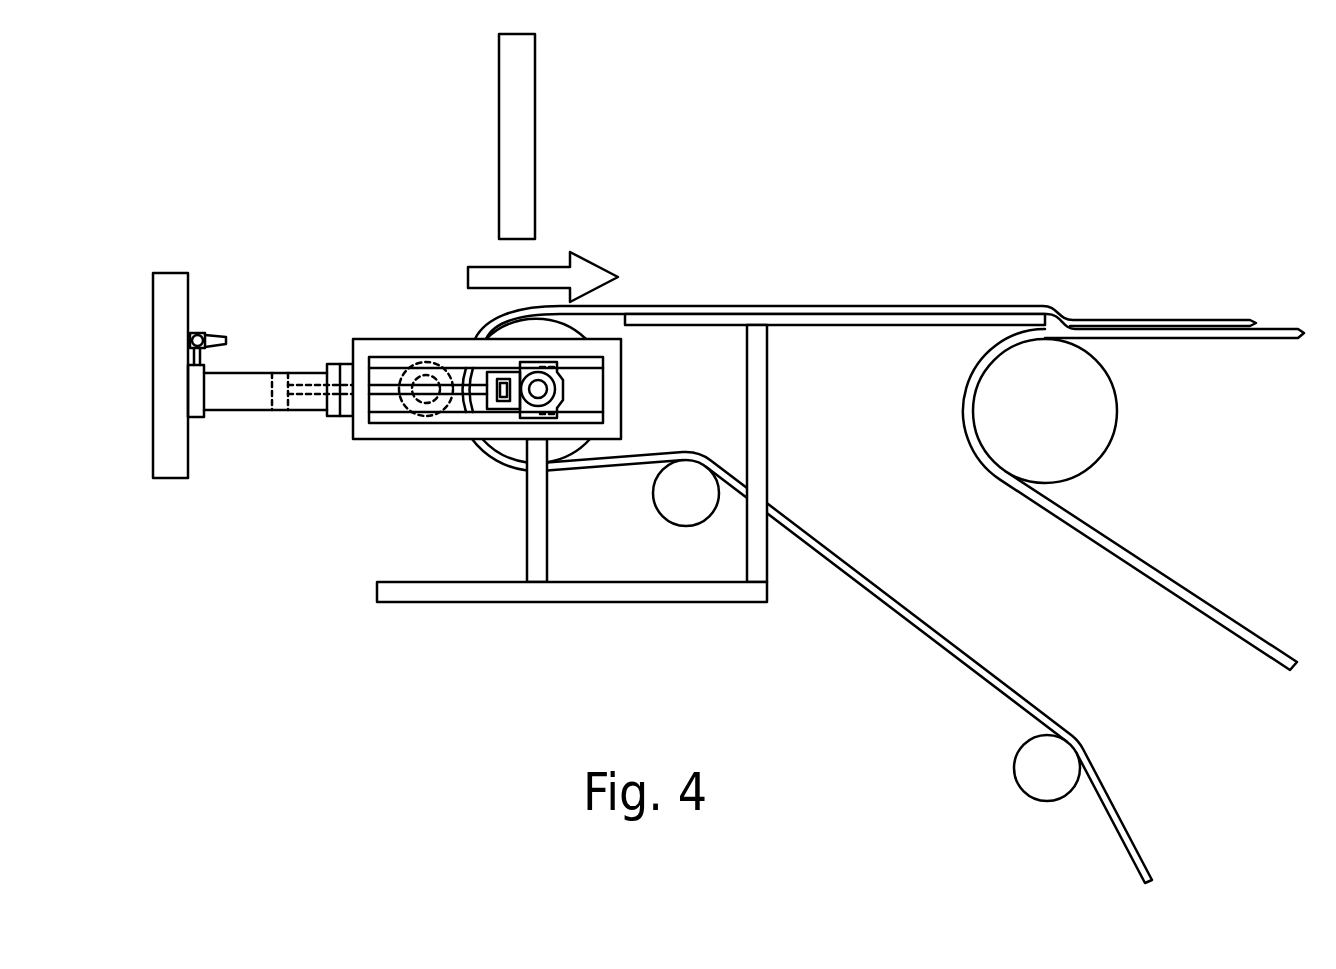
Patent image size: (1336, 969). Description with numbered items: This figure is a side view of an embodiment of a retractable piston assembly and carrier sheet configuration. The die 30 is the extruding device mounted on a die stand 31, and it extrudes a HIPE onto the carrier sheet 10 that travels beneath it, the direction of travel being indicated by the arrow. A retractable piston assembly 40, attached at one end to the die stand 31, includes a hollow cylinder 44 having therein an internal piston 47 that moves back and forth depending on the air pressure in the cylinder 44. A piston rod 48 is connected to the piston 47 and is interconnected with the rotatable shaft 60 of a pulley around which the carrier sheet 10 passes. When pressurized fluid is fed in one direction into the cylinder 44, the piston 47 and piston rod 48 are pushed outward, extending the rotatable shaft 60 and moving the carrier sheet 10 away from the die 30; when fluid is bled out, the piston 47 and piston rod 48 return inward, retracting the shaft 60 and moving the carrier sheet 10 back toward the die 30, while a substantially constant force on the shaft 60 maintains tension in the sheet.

The carrier sheet 10 is at (618, 305).
The die 30 is at (520, 175).
The die stand 31 is at (163, 465).
The retractable piston assembly 40 is at (430, 330).
The cylinder 44 is at (237, 380).
The piston 47 is at (272, 410).
The piston rod 48 is at (396, 388).
The rotatable shaft 60 is at (540, 389).